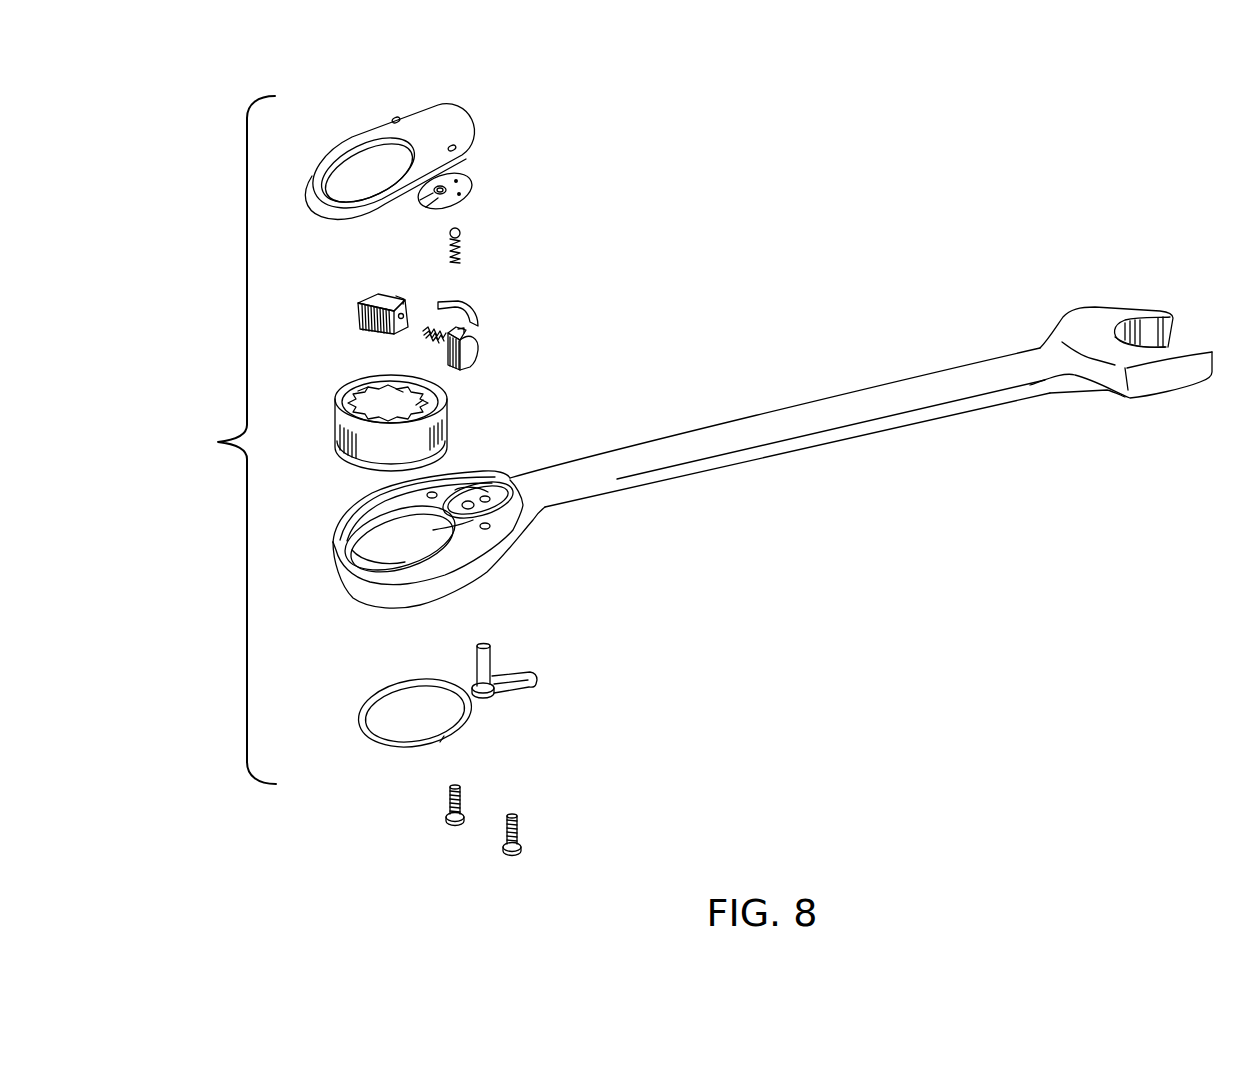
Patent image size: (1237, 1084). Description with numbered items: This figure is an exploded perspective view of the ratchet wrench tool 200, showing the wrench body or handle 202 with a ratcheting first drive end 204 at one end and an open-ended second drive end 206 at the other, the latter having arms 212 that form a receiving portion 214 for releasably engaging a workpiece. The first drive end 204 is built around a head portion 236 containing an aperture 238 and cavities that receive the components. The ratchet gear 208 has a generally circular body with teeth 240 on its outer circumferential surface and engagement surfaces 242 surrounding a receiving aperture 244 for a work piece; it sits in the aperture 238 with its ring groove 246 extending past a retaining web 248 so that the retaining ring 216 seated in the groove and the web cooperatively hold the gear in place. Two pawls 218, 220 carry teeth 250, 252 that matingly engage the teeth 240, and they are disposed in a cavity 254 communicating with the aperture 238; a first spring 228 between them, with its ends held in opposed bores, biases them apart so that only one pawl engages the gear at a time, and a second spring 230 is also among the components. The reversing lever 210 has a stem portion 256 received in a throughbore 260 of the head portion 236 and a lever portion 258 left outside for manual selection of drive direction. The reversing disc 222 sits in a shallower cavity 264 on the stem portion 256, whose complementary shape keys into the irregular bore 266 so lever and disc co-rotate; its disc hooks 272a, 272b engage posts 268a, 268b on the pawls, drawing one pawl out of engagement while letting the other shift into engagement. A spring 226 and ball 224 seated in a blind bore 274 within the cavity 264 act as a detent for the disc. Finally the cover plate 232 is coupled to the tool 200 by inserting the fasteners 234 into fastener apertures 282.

The tool 200 is at (823, 198).
The handle 202 is at (787, 455).
The first drive end 204 is at (224, 440).
The second drive end 206 is at (1070, 312).
The ratchet gear 208 is at (338, 402).
The reversing lever 210 is at (487, 702).
The arms 212 is at (1133, 315).
The receiving portion 214 is at (1138, 345).
The retaining ring 216 is at (373, 702).
The pawl 218 is at (373, 297).
The pawl 220 is at (470, 362).
The reversing disc 222 is at (472, 187).
The ball 224 is at (462, 232).
The spring 226 is at (462, 256).
The first spring 228 is at (425, 336).
The second spring 230 is at (472, 308).
The cover plate 232 is at (475, 115).
The fasteners 234 is at (456, 826).
The head portion 236 is at (378, 595).
The aperture 238 is at (388, 557).
The teeth 240 is at (362, 443).
The engagement surfaces 242 is at (372, 406).
The receiving aperture 244 is at (430, 399).
The ring groove 246 is at (372, 462).
The retaining web 248 is at (355, 541).
The teeth 250 is at (362, 310).
The teeth 252 is at (447, 350).
The cavity 254 is at (447, 538).
The stem portion 256 is at (490, 666).
The lever portion 258 is at (533, 688).
The throughbore 260 is at (487, 502).
The cavity 264 is at (470, 500).
The irregular bore 266 is at (450, 184).
The post 268a is at (400, 298).
The post 268b is at (465, 331).
The disc hook 272a is at (422, 190).
The disc hook 272b is at (434, 206).
The blind bore 274 is at (472, 507).
The fastener apertures 282 is at (433, 493).